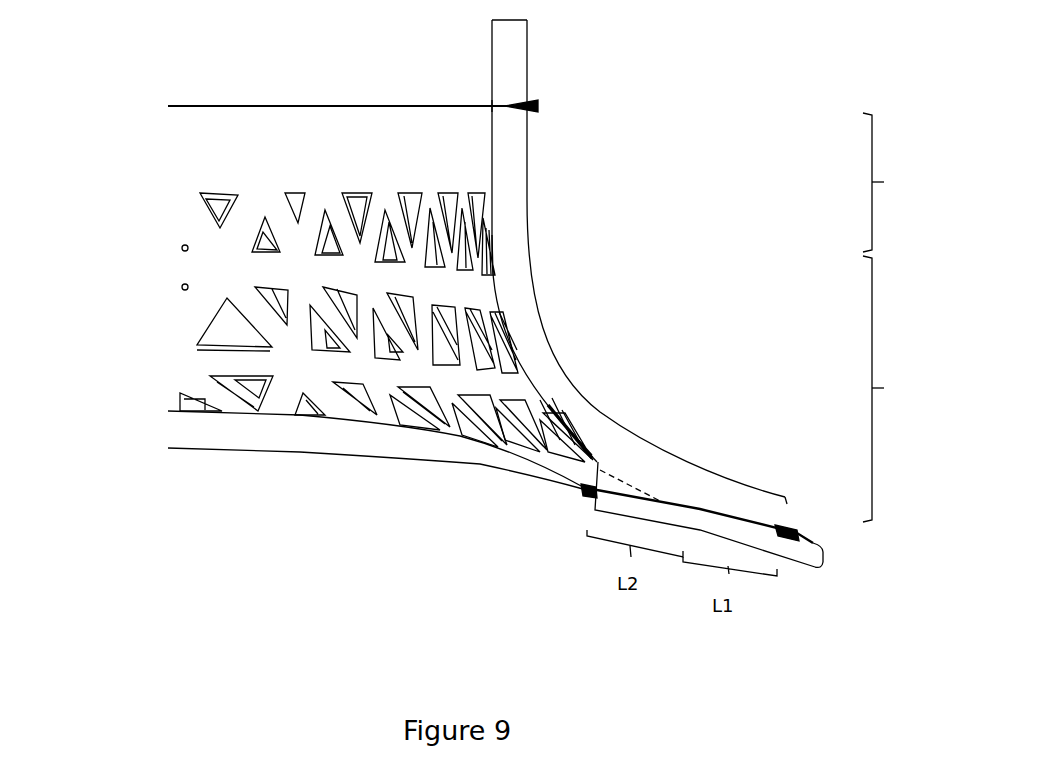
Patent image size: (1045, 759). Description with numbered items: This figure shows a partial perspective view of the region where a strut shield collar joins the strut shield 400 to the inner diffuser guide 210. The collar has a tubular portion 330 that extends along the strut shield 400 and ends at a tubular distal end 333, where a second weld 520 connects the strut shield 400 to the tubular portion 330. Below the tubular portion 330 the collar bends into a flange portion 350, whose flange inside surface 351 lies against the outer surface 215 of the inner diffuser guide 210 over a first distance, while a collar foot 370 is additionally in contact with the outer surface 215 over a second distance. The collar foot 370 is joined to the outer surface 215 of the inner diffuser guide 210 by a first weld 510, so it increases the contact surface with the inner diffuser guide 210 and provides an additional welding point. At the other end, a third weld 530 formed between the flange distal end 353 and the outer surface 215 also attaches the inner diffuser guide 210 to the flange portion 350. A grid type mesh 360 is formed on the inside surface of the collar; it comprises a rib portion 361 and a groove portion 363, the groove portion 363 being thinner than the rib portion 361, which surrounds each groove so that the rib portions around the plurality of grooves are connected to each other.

The strut shield 400 is at (521, 40).
The second weld 520 is at (549, 106).
The tubular distal end 333 is at (509, 109).
The tubular portion 330 is at (902, 182).
The flange portion 350 is at (903, 389).
The collar foot 370 is at (616, 476).
The flange distal end 353 is at (784, 508).
The third weld 530 is at (799, 519).
The outer surface 215 is at (813, 539).
The inner diffuser guide 210 is at (801, 551).
The first weld 510 is at (582, 497).
The flange inside surface 351 is at (539, 393).
The grid type mesh 360 is at (88, 330).
The groove portion 363 is at (266, 241).
The rib portion 361 is at (234, 363).